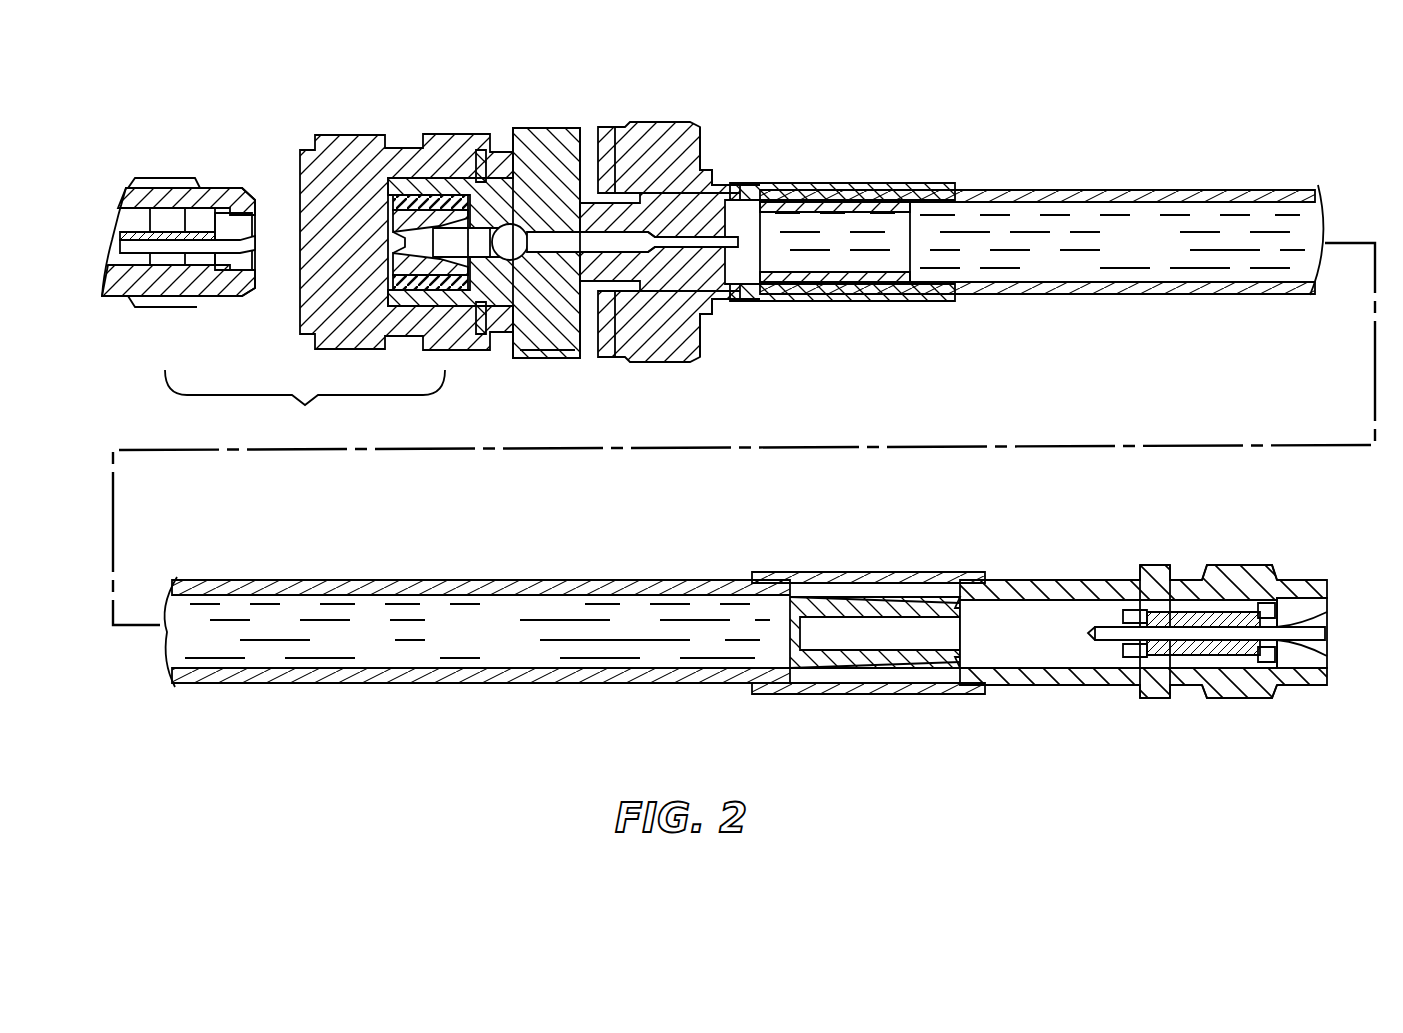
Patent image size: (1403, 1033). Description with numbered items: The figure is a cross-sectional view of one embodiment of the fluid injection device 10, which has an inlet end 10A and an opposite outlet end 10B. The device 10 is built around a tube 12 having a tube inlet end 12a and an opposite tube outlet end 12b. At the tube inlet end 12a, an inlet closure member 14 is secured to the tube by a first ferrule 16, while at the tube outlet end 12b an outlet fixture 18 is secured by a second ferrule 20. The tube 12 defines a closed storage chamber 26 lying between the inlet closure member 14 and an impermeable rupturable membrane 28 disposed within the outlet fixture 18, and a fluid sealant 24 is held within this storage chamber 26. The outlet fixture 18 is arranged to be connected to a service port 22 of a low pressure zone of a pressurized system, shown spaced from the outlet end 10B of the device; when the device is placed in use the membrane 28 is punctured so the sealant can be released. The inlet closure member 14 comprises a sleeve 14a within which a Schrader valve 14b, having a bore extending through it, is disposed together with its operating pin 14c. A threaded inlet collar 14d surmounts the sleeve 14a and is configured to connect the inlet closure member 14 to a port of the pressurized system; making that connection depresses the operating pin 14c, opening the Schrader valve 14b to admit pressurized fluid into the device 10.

The fluid injection device 10 is at (1035, 172).
The inlet end 10A is at (1333, 580).
The outlet end 10B is at (300, 122).
The tube 12 is at (1131, 295).
The tube inlet end 12a is at (923, 562).
The tube outlet end 12b is at (741, 165).
The inlet closure member 14 is at (1092, 705).
The sleeve 14a is at (1076, 582).
The Schrader valve 14b is at (1285, 648).
The operating pin 14c is at (1305, 626).
The threaded inlet collar 14d is at (1247, 701).
The first ferrule 16 is at (875, 683).
The outlet fixture 18 is at (516, 362).
The second ferrule 20 is at (845, 185).
The service port 22 is at (202, 156).
The fluid sealant 24 is at (1230, 235).
The storage chamber 26 is at (1150, 256).
The impermeable rupturable membrane 28 is at (780, 238).